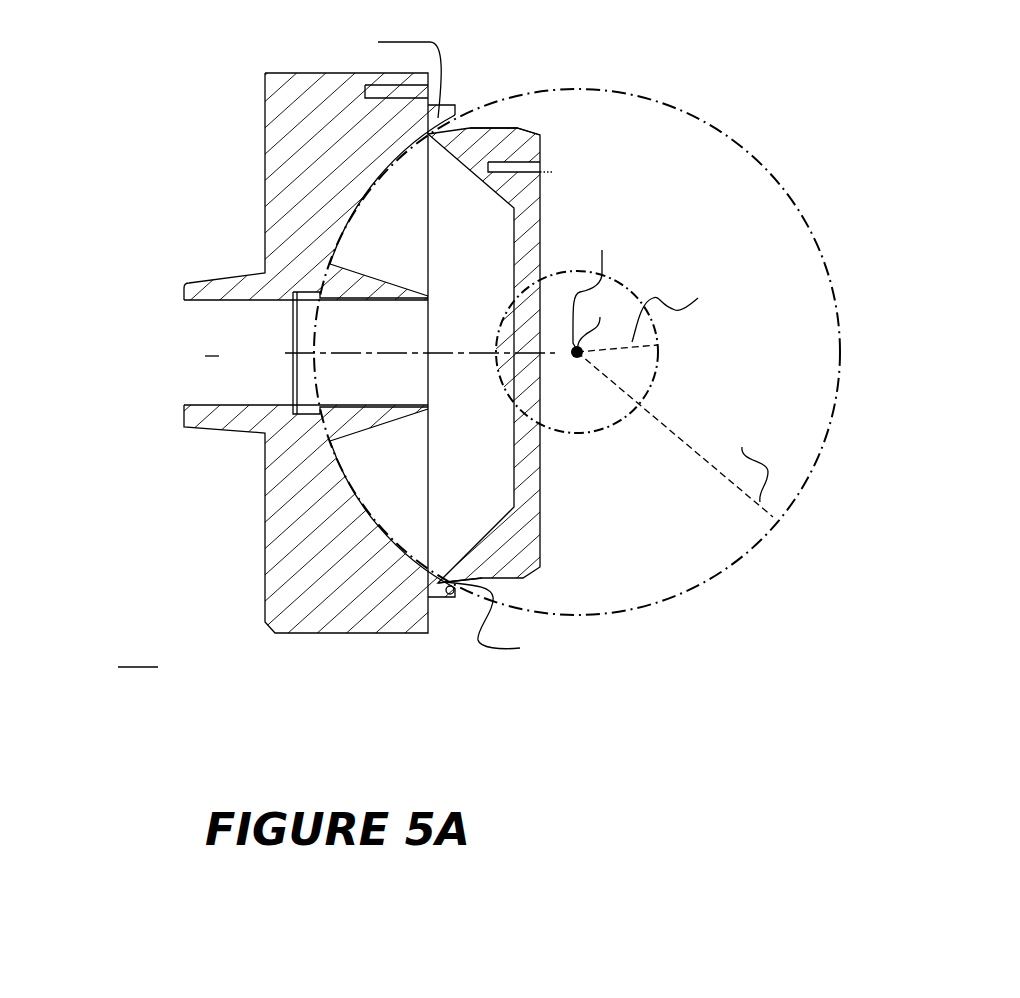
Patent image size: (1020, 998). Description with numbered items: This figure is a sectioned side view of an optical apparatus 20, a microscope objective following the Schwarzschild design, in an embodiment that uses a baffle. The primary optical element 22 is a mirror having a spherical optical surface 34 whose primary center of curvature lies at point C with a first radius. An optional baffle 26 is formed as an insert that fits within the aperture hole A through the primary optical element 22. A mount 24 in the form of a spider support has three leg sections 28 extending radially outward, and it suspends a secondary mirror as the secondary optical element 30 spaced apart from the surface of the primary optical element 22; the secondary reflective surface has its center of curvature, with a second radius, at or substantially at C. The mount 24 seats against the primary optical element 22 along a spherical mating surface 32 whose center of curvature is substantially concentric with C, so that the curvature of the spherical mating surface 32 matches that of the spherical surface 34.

The optical apparatus 20 is at (150, 135).
The primary optical element 22 is at (263, 217).
The mount 24 is at (540, 500).
The baffle 26 is at (377, 428).
The leg sections 28 is at (490, 127).
The secondary optical element 30 is at (495, 330).
The spherical mating surface 32 is at (432, 572).
The spherical optical surface 34 is at (352, 218).